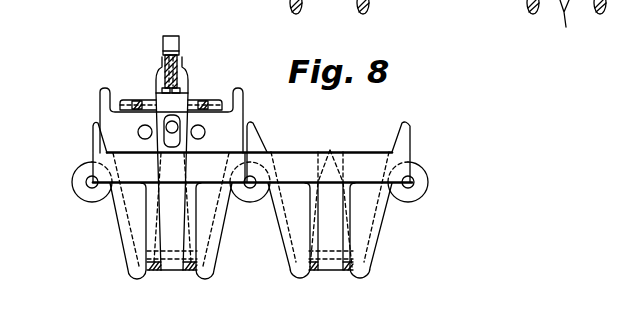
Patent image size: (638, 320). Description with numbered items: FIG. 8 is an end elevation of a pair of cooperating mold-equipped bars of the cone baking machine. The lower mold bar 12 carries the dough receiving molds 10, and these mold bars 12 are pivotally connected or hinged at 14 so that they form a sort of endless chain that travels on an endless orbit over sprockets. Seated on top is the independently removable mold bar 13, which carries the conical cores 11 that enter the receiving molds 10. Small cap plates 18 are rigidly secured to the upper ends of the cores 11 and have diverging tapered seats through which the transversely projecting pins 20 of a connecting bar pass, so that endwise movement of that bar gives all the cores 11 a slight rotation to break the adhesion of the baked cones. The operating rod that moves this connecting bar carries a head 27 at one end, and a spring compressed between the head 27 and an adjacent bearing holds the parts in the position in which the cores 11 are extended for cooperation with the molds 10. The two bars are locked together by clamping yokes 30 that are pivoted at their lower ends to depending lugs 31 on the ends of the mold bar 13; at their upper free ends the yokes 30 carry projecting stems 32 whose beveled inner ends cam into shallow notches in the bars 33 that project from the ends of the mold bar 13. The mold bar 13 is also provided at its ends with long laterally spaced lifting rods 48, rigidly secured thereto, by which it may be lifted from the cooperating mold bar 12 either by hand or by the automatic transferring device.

The receiving mold 10 is at (121, 237).
The conical core 11 is at (567, 28).
The mold bar 12 is at (96, 149).
The mold bar 13 is at (108, 121).
The hinge 14 is at (86, 183).
The cap plate 18 is at (128, 100).
The pin 20 is at (221, 107).
The head 27 is at (178, 45).
The clamping yoke 30 is at (176, 101).
The depending lug 31 is at (152, 273).
The stem 32 is at (179, 66).
The bar 33 is at (178, 127).
The lifting rod 48 is at (205, 132).